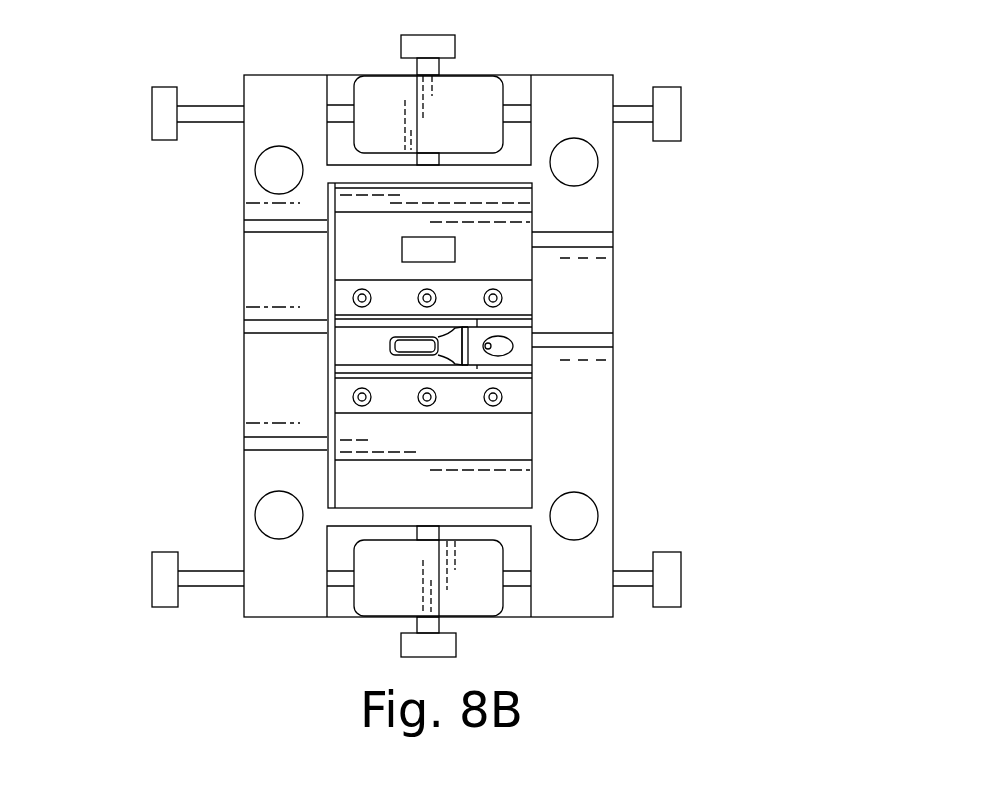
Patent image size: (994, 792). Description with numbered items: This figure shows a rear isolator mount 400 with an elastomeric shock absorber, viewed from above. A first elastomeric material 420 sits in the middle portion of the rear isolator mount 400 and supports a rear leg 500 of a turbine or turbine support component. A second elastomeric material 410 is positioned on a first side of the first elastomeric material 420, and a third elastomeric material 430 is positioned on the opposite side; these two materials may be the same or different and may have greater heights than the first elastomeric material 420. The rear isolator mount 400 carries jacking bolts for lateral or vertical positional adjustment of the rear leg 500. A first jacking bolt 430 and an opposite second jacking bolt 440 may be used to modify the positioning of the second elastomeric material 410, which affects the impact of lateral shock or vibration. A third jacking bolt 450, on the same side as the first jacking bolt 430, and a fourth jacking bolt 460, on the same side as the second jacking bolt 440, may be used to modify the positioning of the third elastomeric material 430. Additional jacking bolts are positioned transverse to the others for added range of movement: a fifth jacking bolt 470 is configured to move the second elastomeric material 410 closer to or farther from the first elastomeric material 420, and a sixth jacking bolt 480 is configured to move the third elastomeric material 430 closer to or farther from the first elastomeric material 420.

The rear isolator mount 400 is at (672, 44).
The second elastomeric material 410 is at (472, 597).
The first elastomeric material 420 is at (347, 342).
The rear leg 500 is at (360, 257).
The third elastomeric material / first jacking bolt 430 is at (442, 87).
The second jacking bolt 440 is at (681, 580).
The third jacking bolt 450 is at (152, 117).
The fourth jacking bolt 460 is at (681, 117).
The fifth jacking bolt 470 is at (402, 646).
The sixth jacking bolt 480 is at (433, 33).